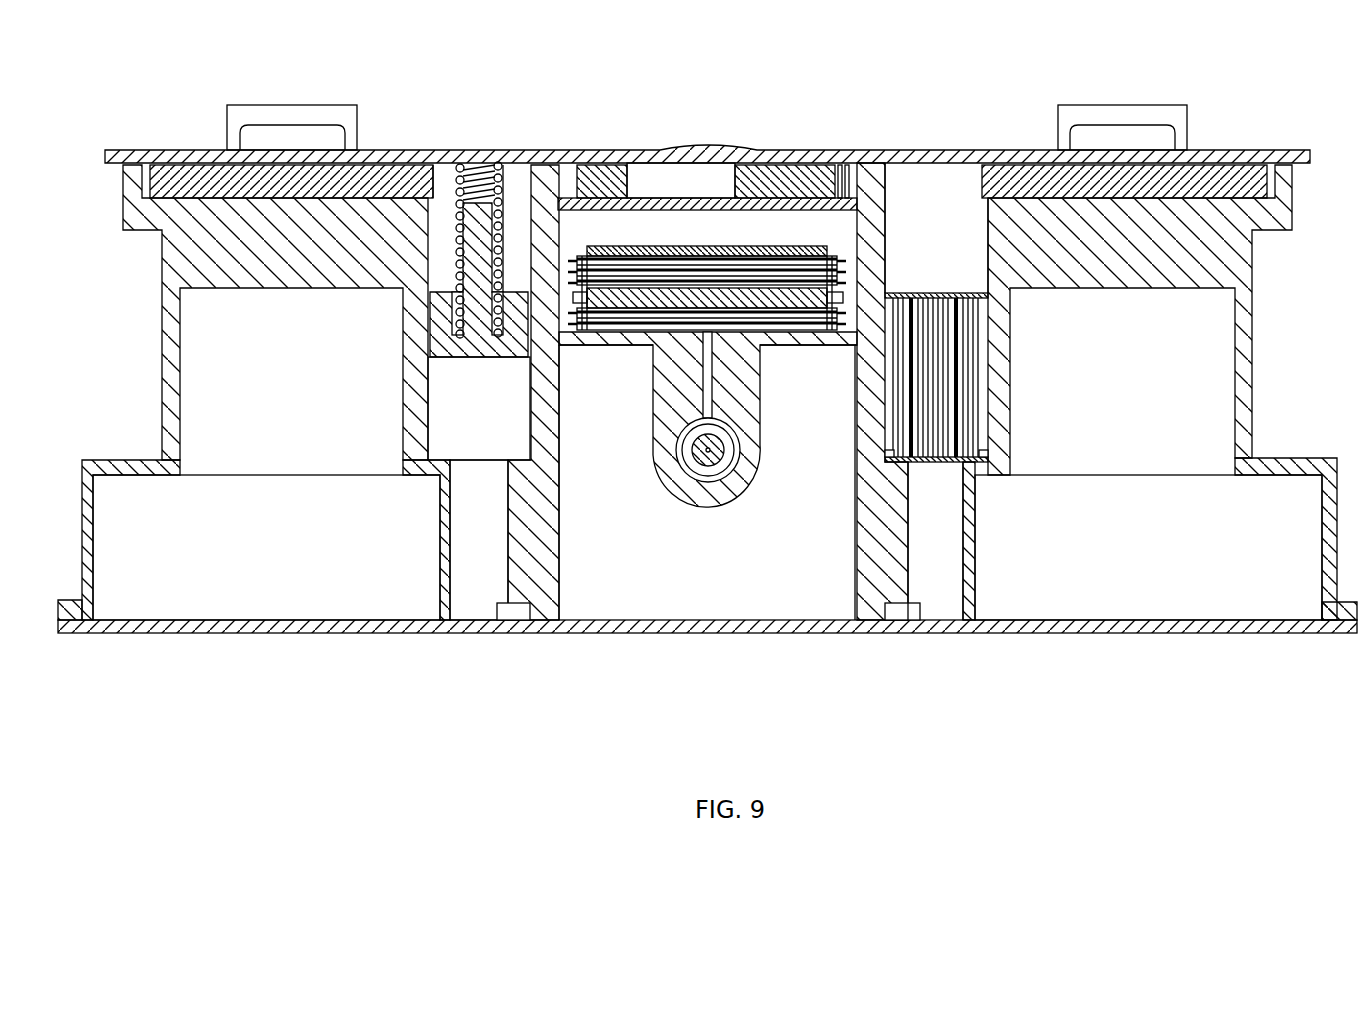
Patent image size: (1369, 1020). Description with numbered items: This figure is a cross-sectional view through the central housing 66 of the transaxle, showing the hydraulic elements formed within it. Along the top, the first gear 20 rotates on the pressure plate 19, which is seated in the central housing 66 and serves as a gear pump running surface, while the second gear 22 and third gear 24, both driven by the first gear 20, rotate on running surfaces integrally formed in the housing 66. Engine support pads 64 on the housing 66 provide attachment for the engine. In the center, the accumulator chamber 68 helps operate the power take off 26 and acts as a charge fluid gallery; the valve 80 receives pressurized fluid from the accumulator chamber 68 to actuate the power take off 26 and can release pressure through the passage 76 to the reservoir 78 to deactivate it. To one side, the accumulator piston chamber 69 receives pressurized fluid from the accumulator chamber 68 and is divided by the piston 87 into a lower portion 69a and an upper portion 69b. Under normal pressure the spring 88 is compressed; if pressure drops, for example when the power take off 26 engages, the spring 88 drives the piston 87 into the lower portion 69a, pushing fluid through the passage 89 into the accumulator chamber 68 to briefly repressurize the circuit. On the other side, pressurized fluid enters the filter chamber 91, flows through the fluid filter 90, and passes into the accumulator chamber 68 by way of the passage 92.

The pressure plate 19 is at (848, 198).
The first gear 20 is at (797, 180).
The second gear 22 is at (384, 180).
The third gear 24 is at (1220, 180).
The power take off 26 is at (801, 405).
The engine support pads 64 is at (292, 105).
The central housing 66 is at (1253, 350).
The accumulator chamber 68 is at (799, 571).
The accumulator piston chamber 69 is at (494, 553).
The lower portion 69a is at (500, 443).
The upper portion 69b is at (517, 232).
The passage 76 is at (706, 380).
The reservoir 78 is at (306, 393).
The valve 80 is at (683, 455).
The piston 87 is at (478, 357).
The spring 88 is at (453, 185).
The passage 89 is at (509, 618).
The fluid filter 90 is at (934, 294).
The filter chamber 91 is at (951, 217).
The passage 92 is at (903, 610).